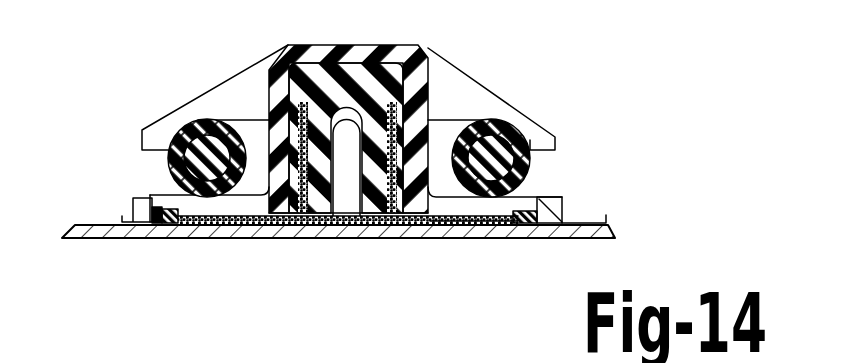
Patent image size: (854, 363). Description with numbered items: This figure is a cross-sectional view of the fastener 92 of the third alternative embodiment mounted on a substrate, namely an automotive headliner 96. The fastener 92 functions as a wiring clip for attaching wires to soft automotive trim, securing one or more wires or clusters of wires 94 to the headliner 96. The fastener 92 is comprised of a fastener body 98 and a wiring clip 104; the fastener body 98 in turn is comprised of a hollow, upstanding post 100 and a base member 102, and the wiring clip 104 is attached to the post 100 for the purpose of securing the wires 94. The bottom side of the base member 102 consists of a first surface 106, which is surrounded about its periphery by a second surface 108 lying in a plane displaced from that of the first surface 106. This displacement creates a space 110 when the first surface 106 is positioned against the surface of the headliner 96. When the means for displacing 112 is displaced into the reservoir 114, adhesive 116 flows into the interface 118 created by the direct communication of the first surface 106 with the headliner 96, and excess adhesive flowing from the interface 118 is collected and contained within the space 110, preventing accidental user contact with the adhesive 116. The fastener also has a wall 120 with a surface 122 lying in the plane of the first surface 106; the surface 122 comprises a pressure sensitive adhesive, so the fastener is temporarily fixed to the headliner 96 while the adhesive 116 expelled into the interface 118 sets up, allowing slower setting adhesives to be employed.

The fastener 92 is at (358, 125).
The wires 94 is at (196, 122).
The automotive headliner 96 is at (77, 226).
The fastener body 98 is at (418, 140).
The hollow, upstanding post 100 is at (376, 70).
The base member 102 is at (128, 202).
The wiring clip 104 is at (236, 88).
The first surface 106 is at (477, 215).
The second surface 108 is at (155, 205).
The space 110 is at (157, 223).
The means for displacing 112 is at (323, 232).
The reservoir 114 is at (398, 83).
The adhesive 116 is at (182, 225).
The interface 118 is at (410, 213).
The wall 120 is at (562, 198).
The surface 122 is at (130, 222).